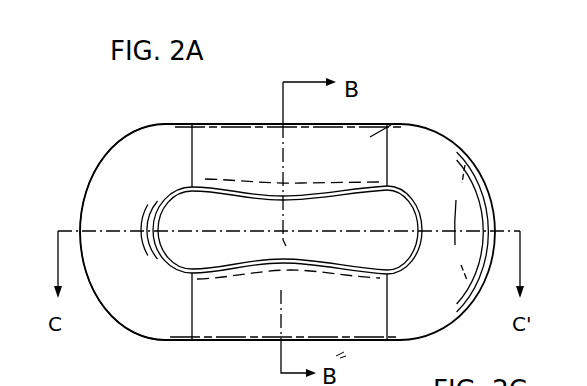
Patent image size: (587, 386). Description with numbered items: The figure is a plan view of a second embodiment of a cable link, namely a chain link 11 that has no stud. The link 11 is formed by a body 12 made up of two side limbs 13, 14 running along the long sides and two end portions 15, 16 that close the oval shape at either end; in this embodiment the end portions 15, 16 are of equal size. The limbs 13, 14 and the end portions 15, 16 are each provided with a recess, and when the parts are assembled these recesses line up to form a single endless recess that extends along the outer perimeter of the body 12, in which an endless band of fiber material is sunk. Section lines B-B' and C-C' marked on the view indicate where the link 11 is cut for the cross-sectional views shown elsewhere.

The chain link 11 is at (474, 112).
The body 12 is at (455, 193).
The side limb 13 is at (210, 132).
The side limb 14 is at (213, 336).
The end portion 15 is at (470, 220).
The end portion 16 is at (112, 183).